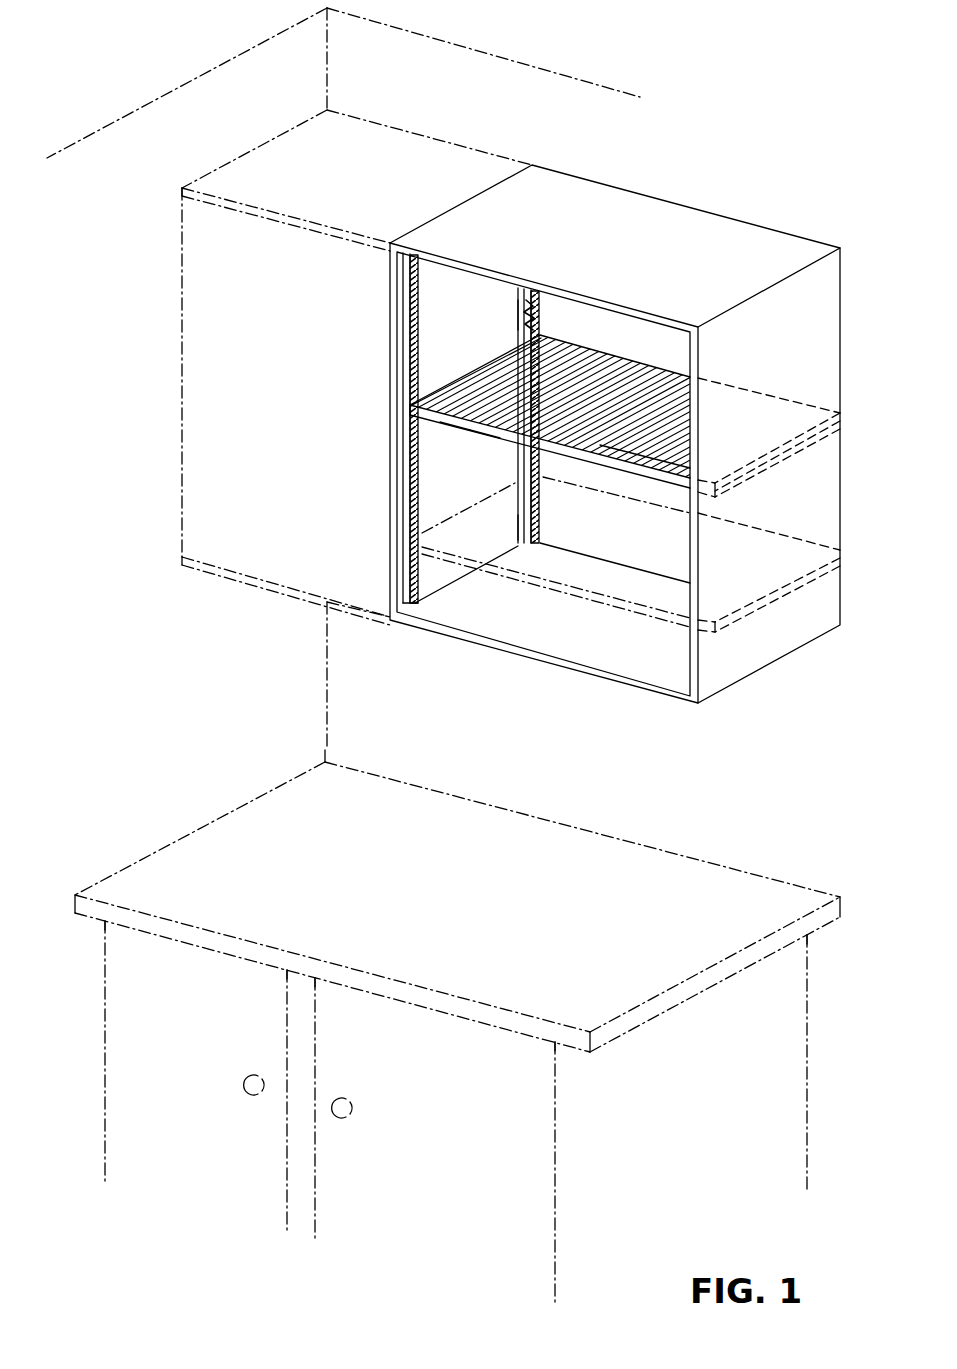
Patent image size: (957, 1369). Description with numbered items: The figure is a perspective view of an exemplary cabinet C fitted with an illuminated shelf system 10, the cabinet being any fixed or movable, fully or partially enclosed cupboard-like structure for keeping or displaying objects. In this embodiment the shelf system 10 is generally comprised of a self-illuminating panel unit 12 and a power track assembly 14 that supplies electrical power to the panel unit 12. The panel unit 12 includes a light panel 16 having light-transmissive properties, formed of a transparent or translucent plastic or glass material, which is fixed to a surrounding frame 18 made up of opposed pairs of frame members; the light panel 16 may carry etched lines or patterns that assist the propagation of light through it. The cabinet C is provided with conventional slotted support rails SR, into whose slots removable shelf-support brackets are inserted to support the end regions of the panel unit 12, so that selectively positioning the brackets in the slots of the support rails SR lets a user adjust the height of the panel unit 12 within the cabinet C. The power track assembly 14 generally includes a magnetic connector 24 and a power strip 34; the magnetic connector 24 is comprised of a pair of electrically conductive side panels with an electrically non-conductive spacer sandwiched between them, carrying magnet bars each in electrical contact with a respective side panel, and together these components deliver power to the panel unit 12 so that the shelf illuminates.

The cabinet C is at (700, 185).
The slotted support rails SR is at (407, 338).
The illuminated shelf system 10 is at (463, 433).
The self-illuminating panel unit 12 is at (667, 407).
The power track assembly 14 is at (513, 318).
The light panel 16 is at (607, 406).
The surrounding frame 18 is at (497, 438).
The magnetic connector 24 is at (527, 293).
The power strip 34 is at (520, 523).